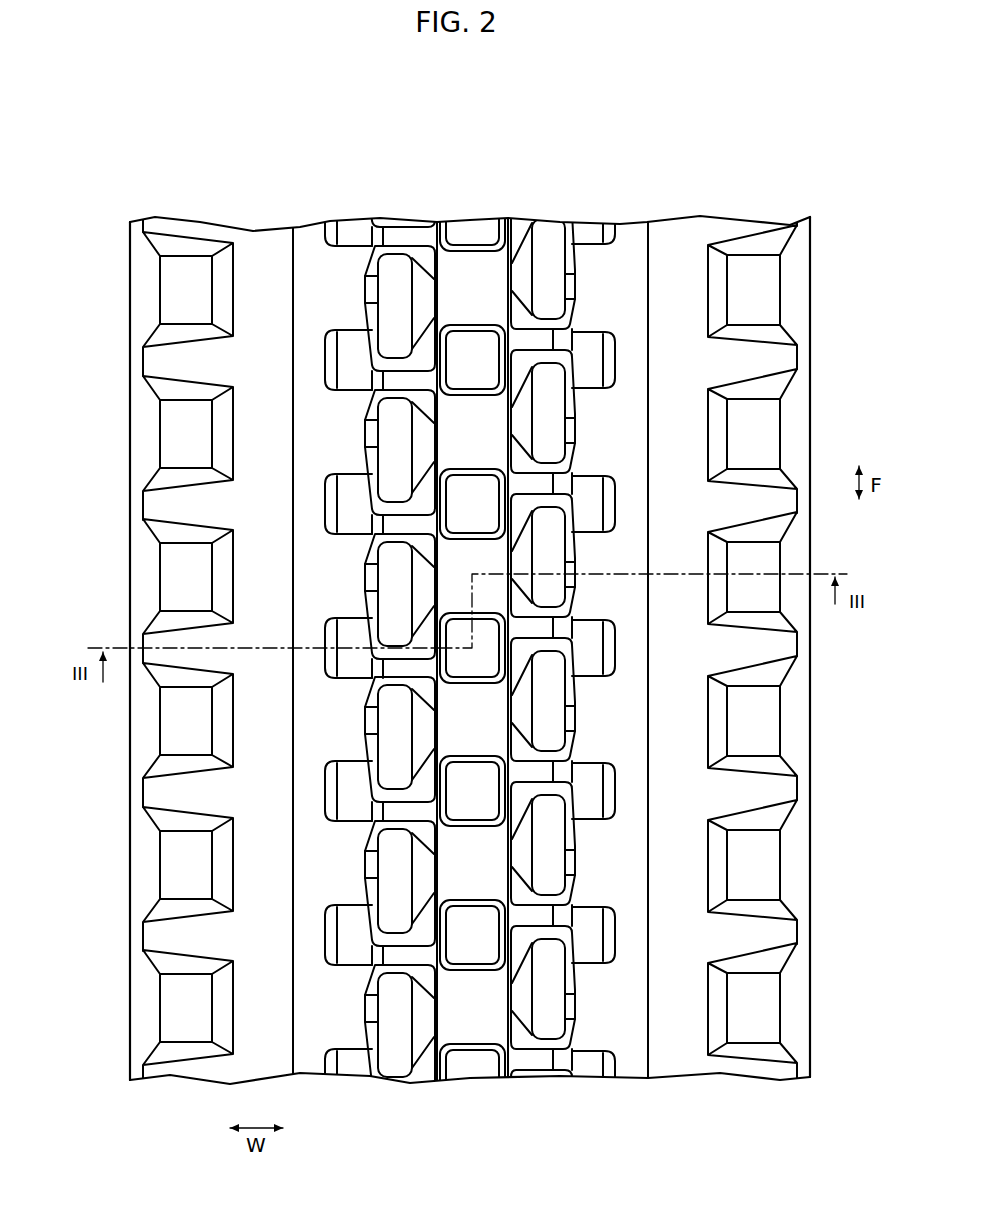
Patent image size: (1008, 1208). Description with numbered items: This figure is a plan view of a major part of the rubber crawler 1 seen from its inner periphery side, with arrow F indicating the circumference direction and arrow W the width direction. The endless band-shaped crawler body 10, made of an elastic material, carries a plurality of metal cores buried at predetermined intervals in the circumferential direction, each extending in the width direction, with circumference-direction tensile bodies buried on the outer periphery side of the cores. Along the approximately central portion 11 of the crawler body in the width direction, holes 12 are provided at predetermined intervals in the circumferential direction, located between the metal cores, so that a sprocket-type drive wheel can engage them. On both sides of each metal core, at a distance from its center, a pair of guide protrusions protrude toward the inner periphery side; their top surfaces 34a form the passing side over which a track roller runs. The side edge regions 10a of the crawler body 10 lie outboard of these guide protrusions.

The rubber crawler 1 is at (806, 181).
The crawler body 10 is at (818, 227).
The side edge portion of crawler body 10a is at (128, 386).
The central portion 11 is at (470, 1062).
The holes 12 is at (469, 346).
The top surface 34a is at (392, 311).